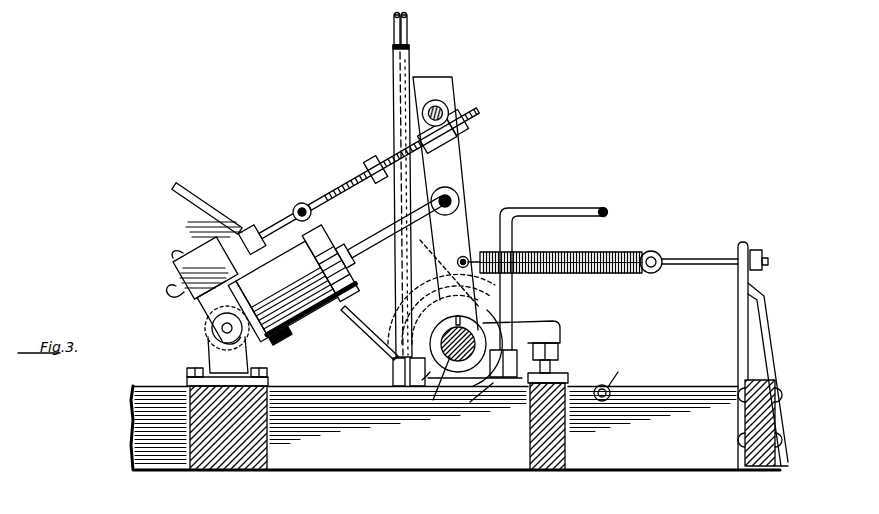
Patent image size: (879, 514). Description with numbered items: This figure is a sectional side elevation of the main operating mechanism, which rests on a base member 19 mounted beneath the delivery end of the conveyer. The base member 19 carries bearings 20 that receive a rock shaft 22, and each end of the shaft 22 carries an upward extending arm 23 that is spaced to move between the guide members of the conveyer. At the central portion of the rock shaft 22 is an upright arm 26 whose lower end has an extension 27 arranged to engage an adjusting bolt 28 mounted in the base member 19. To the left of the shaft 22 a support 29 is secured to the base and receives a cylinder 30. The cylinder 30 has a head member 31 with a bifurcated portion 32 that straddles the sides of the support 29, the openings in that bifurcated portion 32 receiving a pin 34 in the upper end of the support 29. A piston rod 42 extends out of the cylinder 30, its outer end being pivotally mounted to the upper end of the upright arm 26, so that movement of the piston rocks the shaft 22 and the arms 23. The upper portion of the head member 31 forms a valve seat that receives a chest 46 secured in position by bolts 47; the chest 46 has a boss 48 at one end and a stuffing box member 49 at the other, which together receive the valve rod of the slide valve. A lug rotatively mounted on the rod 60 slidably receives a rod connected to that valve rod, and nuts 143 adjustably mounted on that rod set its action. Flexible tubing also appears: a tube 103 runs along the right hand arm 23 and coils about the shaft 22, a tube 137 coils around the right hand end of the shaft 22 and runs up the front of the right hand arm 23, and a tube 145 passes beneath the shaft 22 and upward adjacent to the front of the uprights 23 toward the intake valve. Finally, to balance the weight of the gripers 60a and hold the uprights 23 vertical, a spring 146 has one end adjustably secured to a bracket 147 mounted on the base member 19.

The base member 19 is at (455, 428).
The bearings 20 is at (393, 376).
The rock shaft 22 is at (457, 385).
The upward extending arm 23 is at (456, 160).
The upright arm 26 is at (462, 212).
The extension 27 is at (552, 330).
The adjusting bolt 28 is at (560, 352).
The support 29 is at (227, 403).
The cylinder 30 is at (301, 282).
The head member 31 is at (248, 311).
The bifurcated portion 32 is at (226, 315).
The pin 34 is at (212, 330).
The piston rod 42 is at (372, 238).
The chest 46 is at (207, 260).
The bolts 47 is at (250, 228).
The boss 48 is at (176, 289).
The stuffing box member 49 is at (298, 207).
The rod 60 is at (447, 108).
The gripers 60a is at (464, 137).
The flexible tube 103 is at (407, 32).
The tube 137 is at (394, 30).
The nuts 143 is at (368, 160).
The flexible tube 145 is at (393, 107).
The spring 146 is at (618, 250).
The bracket 147 is at (738, 326).